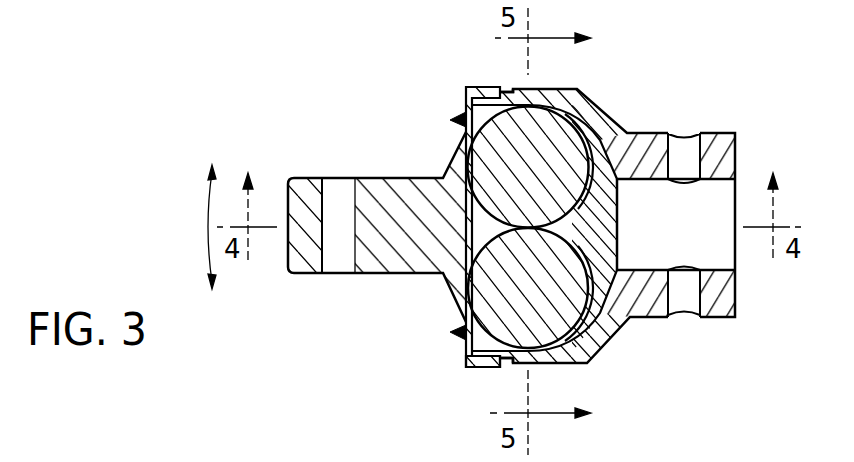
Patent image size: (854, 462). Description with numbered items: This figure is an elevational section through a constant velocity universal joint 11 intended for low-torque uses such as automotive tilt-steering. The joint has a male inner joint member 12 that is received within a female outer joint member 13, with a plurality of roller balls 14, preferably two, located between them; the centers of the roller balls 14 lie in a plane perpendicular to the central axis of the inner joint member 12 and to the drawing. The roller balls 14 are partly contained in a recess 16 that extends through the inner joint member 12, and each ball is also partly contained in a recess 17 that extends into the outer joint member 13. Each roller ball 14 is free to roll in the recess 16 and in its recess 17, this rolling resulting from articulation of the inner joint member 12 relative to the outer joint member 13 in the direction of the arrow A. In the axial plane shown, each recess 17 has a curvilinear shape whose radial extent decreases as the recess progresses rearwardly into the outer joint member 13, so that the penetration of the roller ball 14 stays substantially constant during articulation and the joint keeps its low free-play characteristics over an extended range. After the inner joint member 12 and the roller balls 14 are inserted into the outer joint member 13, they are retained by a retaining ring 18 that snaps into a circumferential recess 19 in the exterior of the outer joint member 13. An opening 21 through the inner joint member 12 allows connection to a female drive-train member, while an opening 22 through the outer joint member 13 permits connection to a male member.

The universal joint 11 is at (440, 340).
The inner joint member 12 is at (393, 178).
The outer joint member 13 is at (652, 133).
The roller balls 14 is at (588, 112).
The recess 16 is at (598, 217).
The recess 17 is at (468, 363).
The retaining ring 18 is at (466, 87).
The circumferential recess 19 is at (505, 90).
The opening 21 is at (317, 193).
The opening 22 is at (700, 136).
The arrow A is at (207, 226).